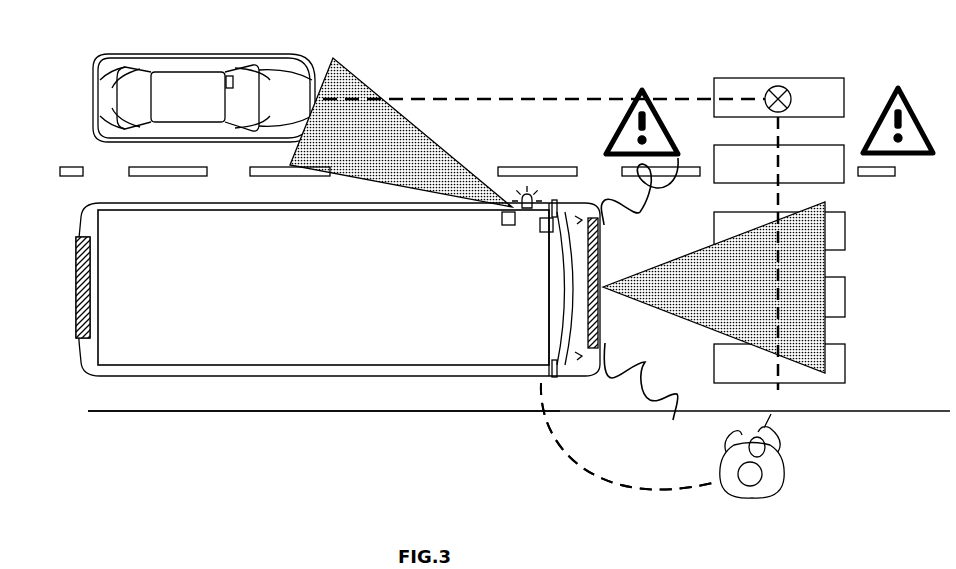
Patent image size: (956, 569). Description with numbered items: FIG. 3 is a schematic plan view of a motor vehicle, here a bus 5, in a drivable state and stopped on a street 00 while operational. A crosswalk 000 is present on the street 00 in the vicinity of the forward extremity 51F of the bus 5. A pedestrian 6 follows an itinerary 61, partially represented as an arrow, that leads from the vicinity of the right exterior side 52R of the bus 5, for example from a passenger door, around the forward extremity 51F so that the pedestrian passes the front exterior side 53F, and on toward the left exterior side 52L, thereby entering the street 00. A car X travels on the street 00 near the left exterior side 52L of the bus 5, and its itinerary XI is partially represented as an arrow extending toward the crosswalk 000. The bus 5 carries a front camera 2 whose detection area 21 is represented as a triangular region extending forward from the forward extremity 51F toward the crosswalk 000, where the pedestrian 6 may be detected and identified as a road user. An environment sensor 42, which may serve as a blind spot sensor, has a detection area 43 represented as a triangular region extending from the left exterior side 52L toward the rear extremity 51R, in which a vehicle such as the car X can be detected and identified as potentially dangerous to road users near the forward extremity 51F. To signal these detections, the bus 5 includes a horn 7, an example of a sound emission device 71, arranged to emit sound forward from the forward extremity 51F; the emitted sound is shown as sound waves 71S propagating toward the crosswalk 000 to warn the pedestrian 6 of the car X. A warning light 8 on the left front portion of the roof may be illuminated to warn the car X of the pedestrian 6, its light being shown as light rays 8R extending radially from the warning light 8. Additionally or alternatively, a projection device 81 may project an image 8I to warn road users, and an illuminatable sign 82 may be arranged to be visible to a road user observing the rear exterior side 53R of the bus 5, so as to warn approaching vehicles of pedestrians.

The car X is at (200, 87).
The itinerary of the car XI is at (442, 99).
The detection area of the environment sensor 43 is at (437, 145).
The warning light 8 is at (522, 190).
The light rays 8R is at (535, 197).
The image 8I is at (628, 115).
The crosswalk 000 is at (850, 70).
The left exterior side of the bus 52L is at (131, 203).
The right exterior side of the bus 52R is at (338, 374).
The rear exterior side of the bus 53R is at (74, 292).
The illuminatable sign 82 is at (88, 308).
The rear extremity of the bus 51R is at (71, 370).
The forward extremity of the bus 51F is at (612, 398).
The bus 5 is at (158, 377).
The front camera 2 is at (544, 290).
The street 00 is at (229, 412).
The environment sensor 42 is at (483, 243).
The projection device 81 is at (538, 236).
The front exterior side of the bus 53F is at (598, 246).
The sound waves 71S is at (640, 212).
The detection area of the front camera 21 is at (828, 258).
The itinerary of the pedestrian 61 is at (777, 390).
The pedestrian 6 is at (752, 486).
The horn 7 is at (552, 428).
The sound emission device 71 is at (626, 436).